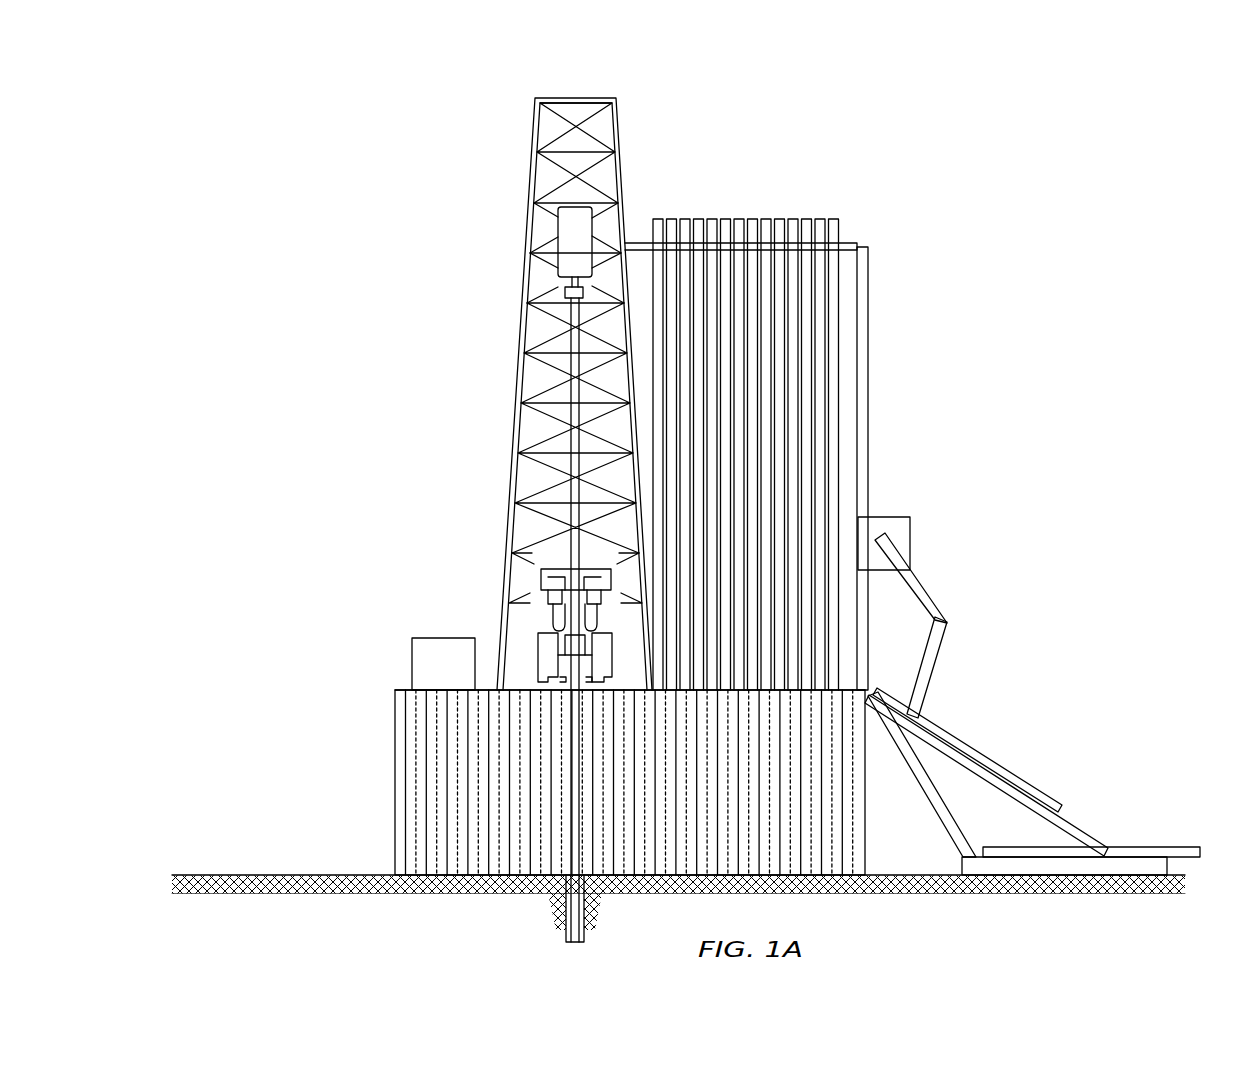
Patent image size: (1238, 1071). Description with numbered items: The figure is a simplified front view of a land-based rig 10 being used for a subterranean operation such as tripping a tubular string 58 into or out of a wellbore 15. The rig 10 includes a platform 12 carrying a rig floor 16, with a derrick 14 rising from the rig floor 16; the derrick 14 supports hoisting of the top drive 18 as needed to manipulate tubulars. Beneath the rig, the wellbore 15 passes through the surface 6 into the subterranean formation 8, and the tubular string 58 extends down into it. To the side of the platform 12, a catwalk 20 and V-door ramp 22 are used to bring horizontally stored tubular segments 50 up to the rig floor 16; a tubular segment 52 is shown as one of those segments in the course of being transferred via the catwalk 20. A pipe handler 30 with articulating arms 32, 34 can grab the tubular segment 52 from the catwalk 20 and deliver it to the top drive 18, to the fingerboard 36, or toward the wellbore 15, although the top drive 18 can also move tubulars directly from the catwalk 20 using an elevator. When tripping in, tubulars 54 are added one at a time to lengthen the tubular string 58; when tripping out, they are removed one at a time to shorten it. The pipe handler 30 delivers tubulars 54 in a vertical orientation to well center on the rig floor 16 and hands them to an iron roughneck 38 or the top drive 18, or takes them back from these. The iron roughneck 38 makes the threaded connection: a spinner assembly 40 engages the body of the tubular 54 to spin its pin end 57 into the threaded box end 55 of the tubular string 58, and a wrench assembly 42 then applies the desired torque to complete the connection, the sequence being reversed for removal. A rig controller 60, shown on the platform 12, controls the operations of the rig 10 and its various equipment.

The surface 6 is at (217, 874).
The subterranean formation 8 is at (396, 936).
The rig 10 is at (407, 115).
The platform 12 is at (395, 712).
The derrick 14 is at (616, 118).
The wellbore 15 is at (562, 908).
The rig floor 16 is at (393, 687).
The top drive 18 is at (558, 231).
The catwalk 20 is at (1030, 818).
The V-door ramp 22 is at (927, 800).
The pipe handler 30 is at (910, 530).
The articulating arm 32 is at (928, 589).
The articulating arm 34 is at (933, 670).
The fingerboard 36 is at (862, 245).
The iron roughneck 38 is at (534, 533).
The spinner assembly 40 is at (540, 572).
The wrench assembly 42 is at (612, 668).
The horizontally stored tubular segments 50 is at (1133, 847).
The tubular segment 52 is at (983, 760).
The tubulars 54 is at (668, 218).
The threaded box end 55 is at (565, 291).
The pin end 57 is at (565, 650).
The tubular string 58 is at (570, 769).
The rig controller 60 is at (456, 673).